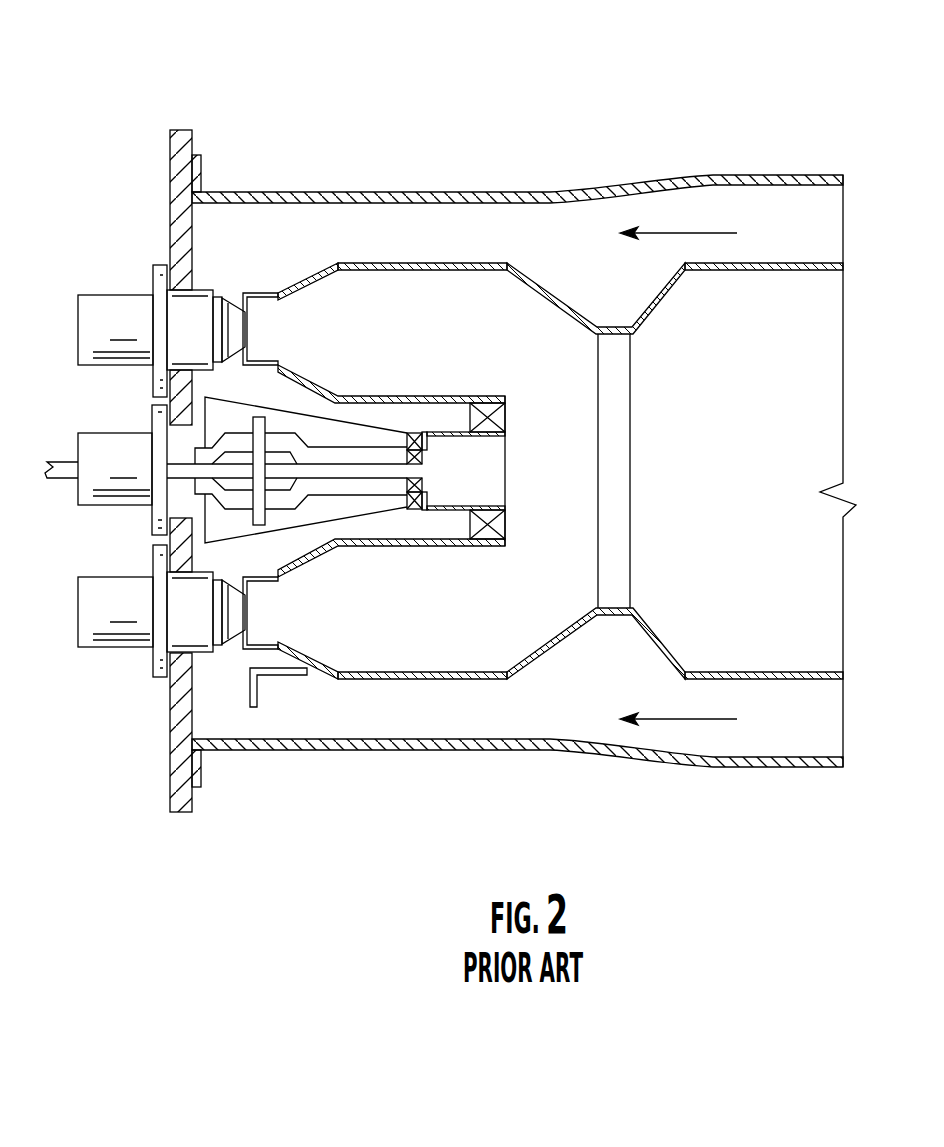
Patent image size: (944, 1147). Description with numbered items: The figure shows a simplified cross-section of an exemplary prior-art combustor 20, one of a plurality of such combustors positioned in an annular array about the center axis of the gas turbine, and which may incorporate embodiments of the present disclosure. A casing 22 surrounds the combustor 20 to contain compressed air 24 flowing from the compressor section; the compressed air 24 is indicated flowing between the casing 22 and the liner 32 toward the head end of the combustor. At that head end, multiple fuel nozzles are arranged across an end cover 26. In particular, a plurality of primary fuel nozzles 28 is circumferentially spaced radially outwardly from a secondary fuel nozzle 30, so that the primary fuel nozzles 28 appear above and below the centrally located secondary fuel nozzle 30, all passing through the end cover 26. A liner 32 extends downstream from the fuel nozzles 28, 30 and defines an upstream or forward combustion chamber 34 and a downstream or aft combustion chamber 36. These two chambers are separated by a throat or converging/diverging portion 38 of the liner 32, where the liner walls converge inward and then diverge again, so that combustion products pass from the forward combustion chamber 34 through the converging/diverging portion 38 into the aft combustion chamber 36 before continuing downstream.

The combustor 20 is at (248, 83).
The casing 22 is at (452, 193).
The compressed air 24 is at (699, 232).
The end cover 26 is at (172, 741).
The primary fuel nozzles 28 is at (207, 287).
The secondary fuel nozzle 30 is at (365, 514).
The liner 32 is at (550, 292).
The forward combustion chamber 34 is at (446, 349).
The aft combustion chamber 36 is at (779, 435).
The converging/diverging portion 38 is at (632, 390).